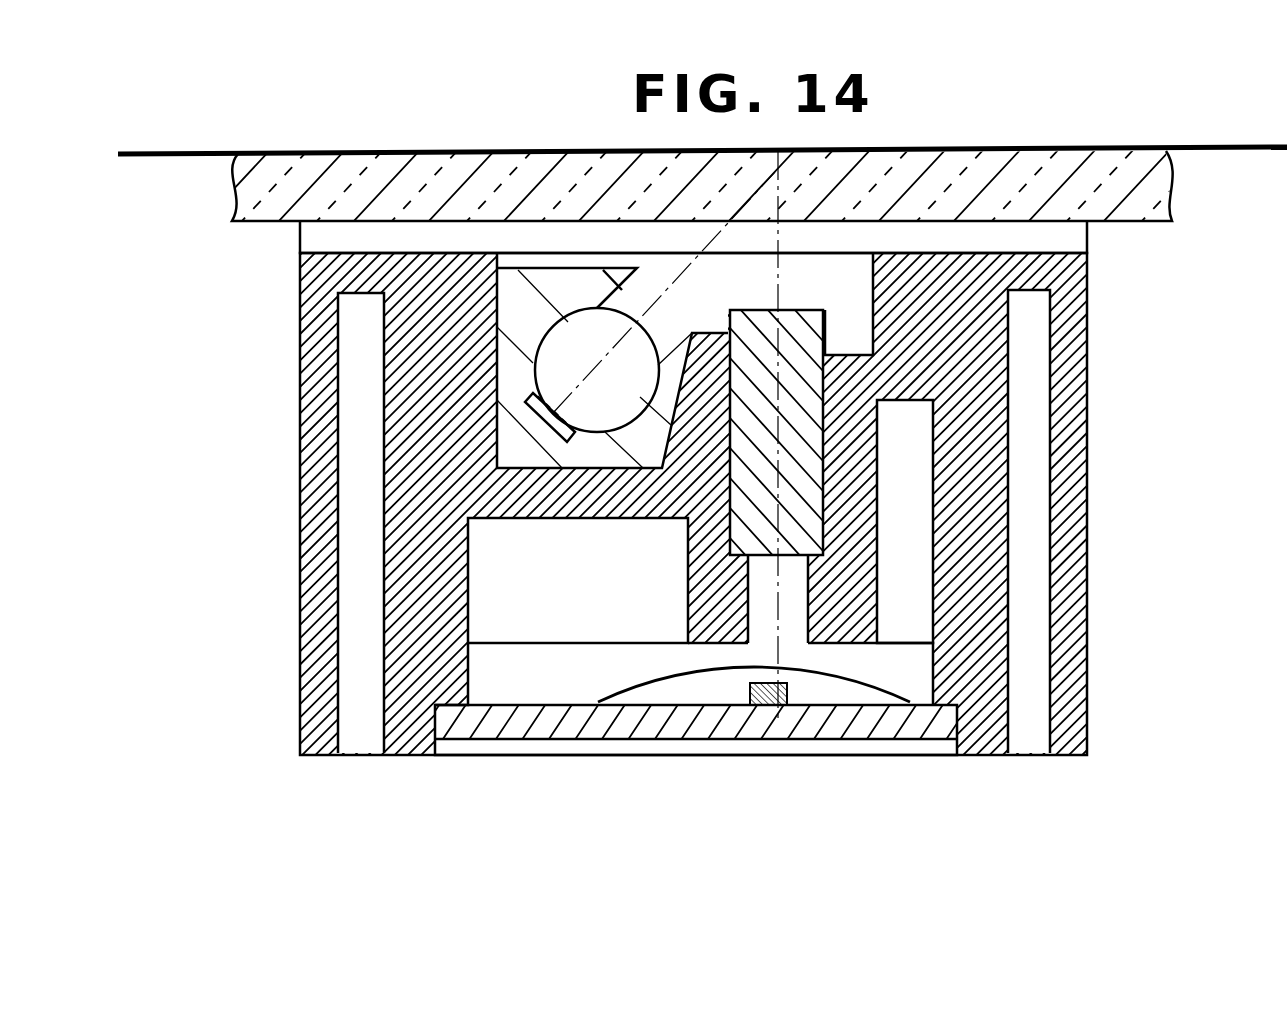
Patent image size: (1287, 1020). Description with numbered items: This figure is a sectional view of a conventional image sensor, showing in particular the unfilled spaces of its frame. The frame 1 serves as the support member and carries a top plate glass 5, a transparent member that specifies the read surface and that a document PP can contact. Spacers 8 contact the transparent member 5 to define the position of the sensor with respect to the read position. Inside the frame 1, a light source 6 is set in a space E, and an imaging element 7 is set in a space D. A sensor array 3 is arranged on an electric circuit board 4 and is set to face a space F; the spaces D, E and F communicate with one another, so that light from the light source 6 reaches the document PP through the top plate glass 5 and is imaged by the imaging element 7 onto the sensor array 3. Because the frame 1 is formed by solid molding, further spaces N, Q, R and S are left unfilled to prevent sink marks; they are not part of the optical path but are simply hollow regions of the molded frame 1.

The document PP is at (1253, 146).
The top plate glass 5 is at (1172, 183).
The spacers 8 is at (1070, 233).
The frame 1 is at (322, 688).
The space N is at (363, 533).
The space S is at (1020, 572).
The space R is at (902, 512).
The space E is at (556, 264).
The light source 6 is at (508, 364).
The imaging element 7 is at (828, 332).
The space D is at (820, 442).
The space Q is at (558, 612).
The space F is at (902, 670).
The electric circuit board 4 is at (835, 725).
The sensor array 3 is at (756, 706).